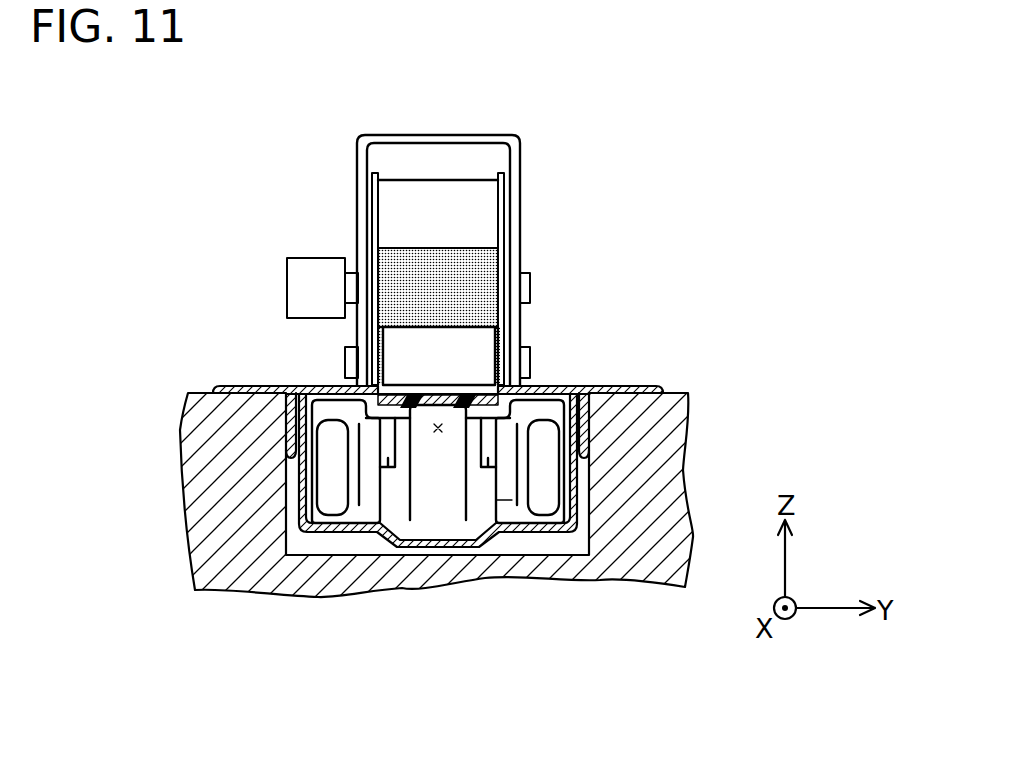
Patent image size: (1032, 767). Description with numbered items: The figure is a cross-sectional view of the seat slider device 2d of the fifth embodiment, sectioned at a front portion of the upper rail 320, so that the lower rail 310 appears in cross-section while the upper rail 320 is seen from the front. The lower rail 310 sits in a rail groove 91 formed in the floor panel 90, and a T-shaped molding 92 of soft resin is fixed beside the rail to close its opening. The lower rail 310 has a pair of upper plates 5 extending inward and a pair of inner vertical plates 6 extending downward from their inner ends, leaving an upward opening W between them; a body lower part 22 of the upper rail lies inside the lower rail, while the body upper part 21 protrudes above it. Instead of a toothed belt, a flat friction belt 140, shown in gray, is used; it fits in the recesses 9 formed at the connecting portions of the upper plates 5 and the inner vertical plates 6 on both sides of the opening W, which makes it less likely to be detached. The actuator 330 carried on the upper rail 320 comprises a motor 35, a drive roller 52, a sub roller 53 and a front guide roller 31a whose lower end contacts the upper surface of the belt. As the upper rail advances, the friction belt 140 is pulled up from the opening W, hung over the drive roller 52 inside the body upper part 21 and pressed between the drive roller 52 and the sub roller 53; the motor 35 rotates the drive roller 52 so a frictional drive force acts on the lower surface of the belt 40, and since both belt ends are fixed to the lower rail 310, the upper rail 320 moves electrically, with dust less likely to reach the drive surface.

The seat slider device 2d is at (236, 118).
The sub roller 53 is at (420, 190).
The body upper part 21 is at (456, 137).
The upper rail 320 is at (533, 121).
The belt 40 is at (460, 255).
The actuator 330 is at (551, 249).
The drive roller 52 is at (504, 268).
The guide roller 31a is at (490, 337).
The motor 35 is at (300, 258).
The friction belt 140 is at (430, 397).
The upper plate 5 is at (318, 398).
The T-shaped molding 92 is at (217, 389).
The recess 9 is at (345, 432).
The floor panel 90 is at (665, 483).
The lower rail 310 is at (302, 540).
The rail groove 91 is at (343, 556).
The inner vertical plate 6 is at (388, 468).
The opening W is at (440, 432).
The body lower part 22 is at (505, 500).